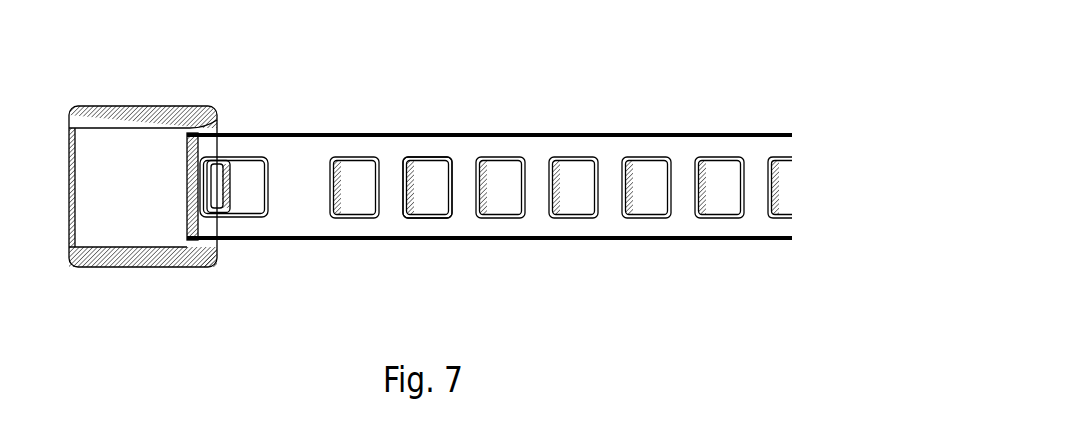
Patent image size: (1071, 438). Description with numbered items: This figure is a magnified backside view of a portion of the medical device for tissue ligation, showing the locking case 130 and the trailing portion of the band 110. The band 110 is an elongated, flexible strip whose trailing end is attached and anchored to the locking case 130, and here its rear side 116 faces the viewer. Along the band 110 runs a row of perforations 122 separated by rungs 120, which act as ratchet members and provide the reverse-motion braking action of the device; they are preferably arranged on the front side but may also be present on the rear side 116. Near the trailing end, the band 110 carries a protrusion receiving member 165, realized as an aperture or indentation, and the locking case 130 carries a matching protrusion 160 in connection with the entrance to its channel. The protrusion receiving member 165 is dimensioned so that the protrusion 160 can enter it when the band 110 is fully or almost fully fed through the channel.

The band 110 is at (540, 107).
The rear side 116 is at (605, 222).
The rungs 120 is at (605, 177).
The perforations 122 is at (423, 207).
The locking case 130 is at (127, 242).
The protrusion 160 is at (222, 175).
The protrusion receiving member 165 is at (243, 190).